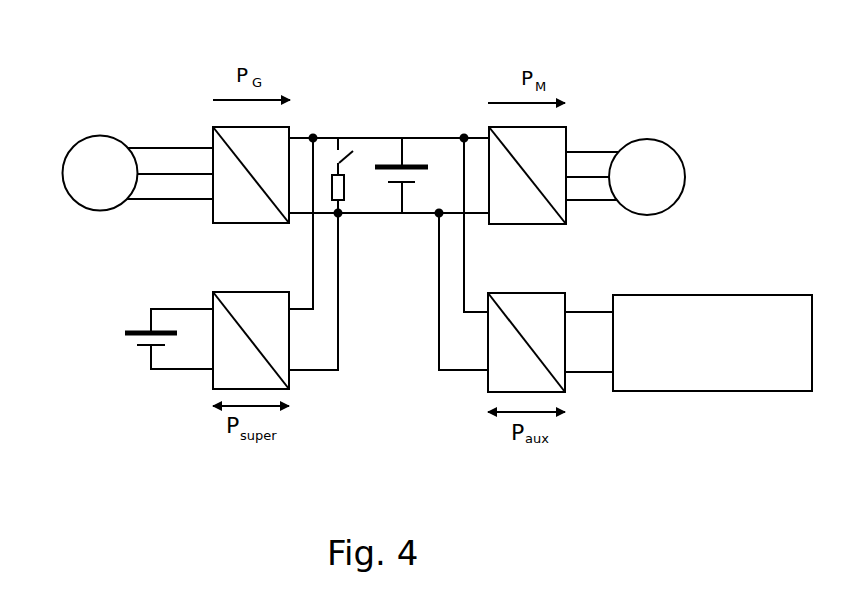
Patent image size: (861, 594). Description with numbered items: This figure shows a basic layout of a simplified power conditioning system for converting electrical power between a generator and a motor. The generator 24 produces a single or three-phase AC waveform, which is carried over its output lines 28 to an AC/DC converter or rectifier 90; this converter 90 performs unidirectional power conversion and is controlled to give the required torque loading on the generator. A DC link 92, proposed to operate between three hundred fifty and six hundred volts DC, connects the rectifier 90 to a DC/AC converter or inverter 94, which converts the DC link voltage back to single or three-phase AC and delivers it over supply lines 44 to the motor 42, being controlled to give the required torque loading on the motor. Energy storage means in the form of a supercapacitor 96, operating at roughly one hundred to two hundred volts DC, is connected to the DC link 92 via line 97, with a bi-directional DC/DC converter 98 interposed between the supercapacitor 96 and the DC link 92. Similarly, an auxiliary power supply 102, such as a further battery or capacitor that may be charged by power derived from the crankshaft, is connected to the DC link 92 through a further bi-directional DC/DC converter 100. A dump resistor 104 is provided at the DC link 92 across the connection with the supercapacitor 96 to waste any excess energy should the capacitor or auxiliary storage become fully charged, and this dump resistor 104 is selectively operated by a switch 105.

The generator 24 is at (87, 147).
The generator output lines 28 is at (155, 147).
The AC/DC converter 90 is at (213, 132).
The DC link 92 is at (422, 137).
The switch 105 is at (350, 150).
The dump resistor 104 is at (356, 199).
The DC/AC converter 94 is at (568, 135).
The motor supply lines 44 is at (598, 148).
The motor 42 is at (673, 145).
The supercapacitor 96 is at (135, 337).
The line 97 is at (338, 278).
The DC/DC converter 98 is at (290, 389).
The further DC/DC converter 100 is at (488, 387).
The auxiliary power supply 102 is at (678, 392).